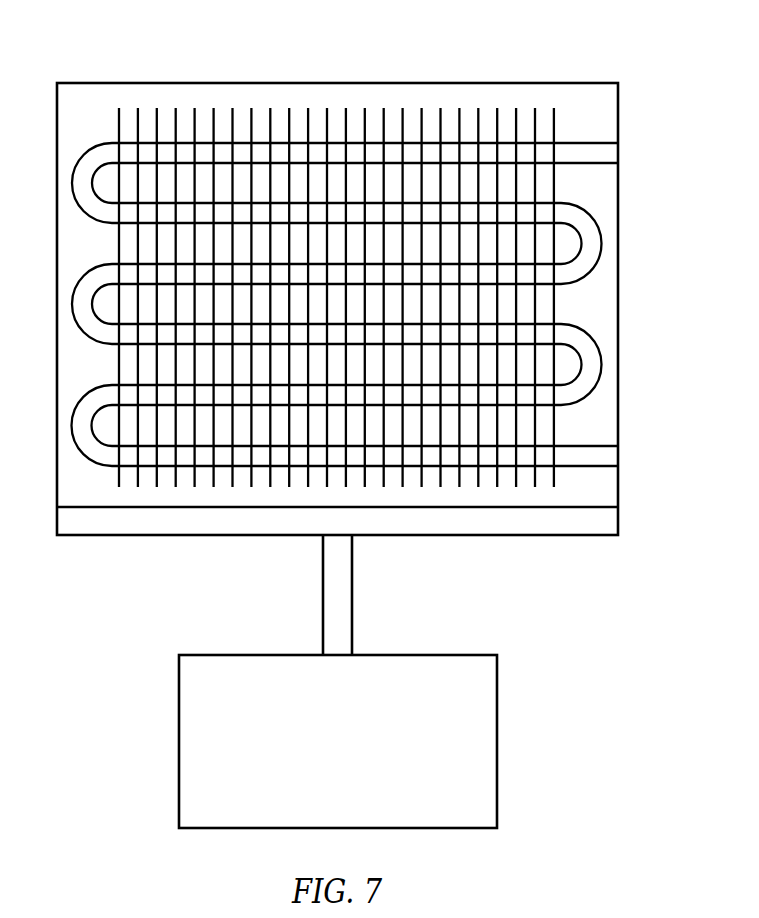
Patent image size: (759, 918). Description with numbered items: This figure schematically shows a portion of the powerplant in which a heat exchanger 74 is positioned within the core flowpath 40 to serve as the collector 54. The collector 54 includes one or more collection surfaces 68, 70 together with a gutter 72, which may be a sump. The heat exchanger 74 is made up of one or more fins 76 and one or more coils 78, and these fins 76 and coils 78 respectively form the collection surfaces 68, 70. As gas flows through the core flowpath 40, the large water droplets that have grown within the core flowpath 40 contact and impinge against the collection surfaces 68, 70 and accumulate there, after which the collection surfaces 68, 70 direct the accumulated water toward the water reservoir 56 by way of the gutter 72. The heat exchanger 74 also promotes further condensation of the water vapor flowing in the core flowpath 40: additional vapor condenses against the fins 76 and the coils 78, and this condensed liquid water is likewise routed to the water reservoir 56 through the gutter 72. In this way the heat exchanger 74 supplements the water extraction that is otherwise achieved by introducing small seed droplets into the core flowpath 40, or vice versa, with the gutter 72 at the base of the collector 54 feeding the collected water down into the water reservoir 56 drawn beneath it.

The collector 54 is at (388, 315).
The heat exchanger 74 is at (388, 315).
The core flowpath 40 is at (606, 127).
The collection surface 68 is at (417, 297).
The fins 76 is at (516, 188).
The collection surface 70 is at (396, 304).
The coils 78 is at (562, 285).
The gutter 72 is at (586, 523).
The water reservoir 56 is at (497, 745).